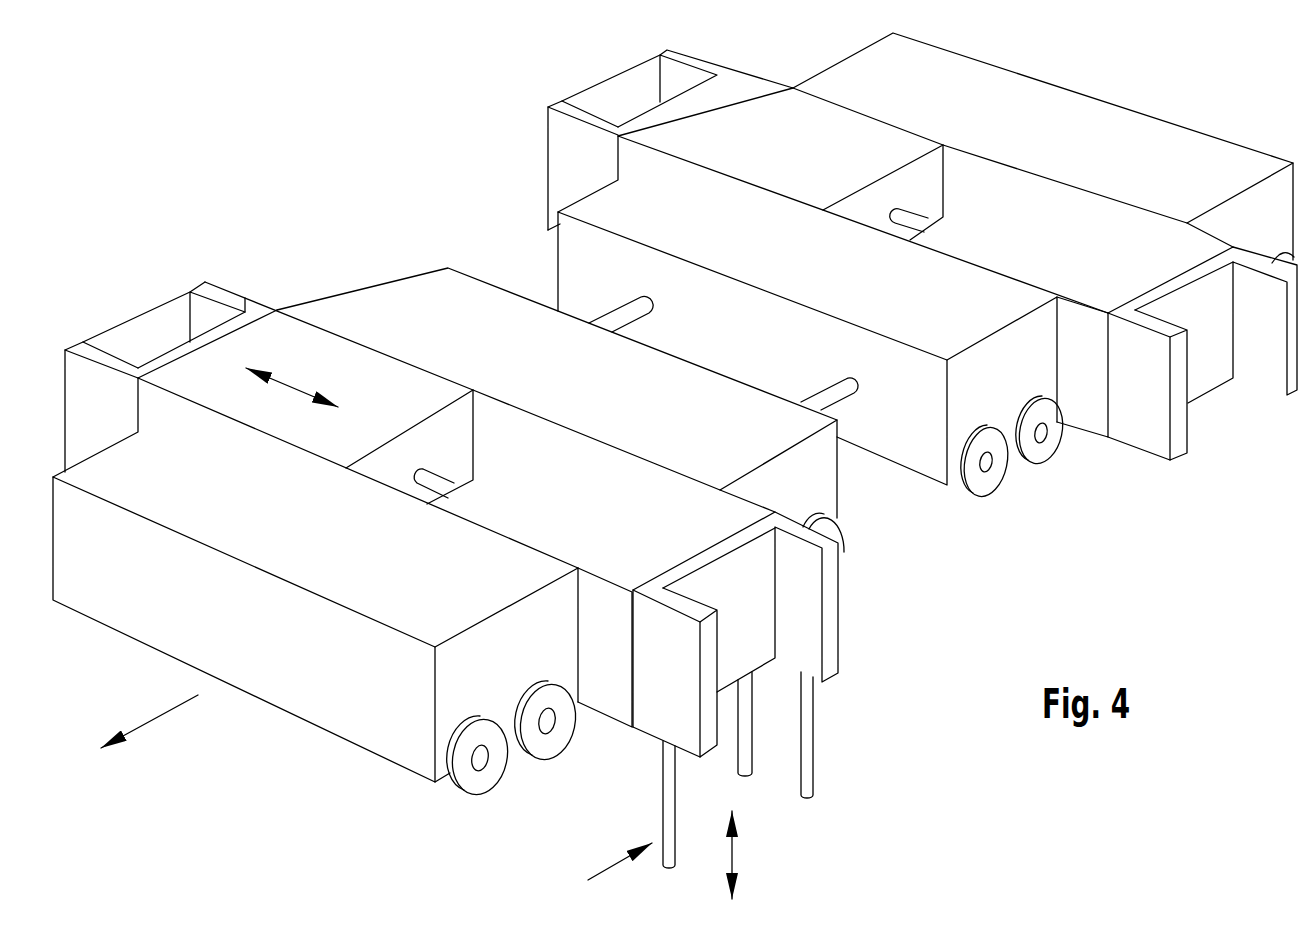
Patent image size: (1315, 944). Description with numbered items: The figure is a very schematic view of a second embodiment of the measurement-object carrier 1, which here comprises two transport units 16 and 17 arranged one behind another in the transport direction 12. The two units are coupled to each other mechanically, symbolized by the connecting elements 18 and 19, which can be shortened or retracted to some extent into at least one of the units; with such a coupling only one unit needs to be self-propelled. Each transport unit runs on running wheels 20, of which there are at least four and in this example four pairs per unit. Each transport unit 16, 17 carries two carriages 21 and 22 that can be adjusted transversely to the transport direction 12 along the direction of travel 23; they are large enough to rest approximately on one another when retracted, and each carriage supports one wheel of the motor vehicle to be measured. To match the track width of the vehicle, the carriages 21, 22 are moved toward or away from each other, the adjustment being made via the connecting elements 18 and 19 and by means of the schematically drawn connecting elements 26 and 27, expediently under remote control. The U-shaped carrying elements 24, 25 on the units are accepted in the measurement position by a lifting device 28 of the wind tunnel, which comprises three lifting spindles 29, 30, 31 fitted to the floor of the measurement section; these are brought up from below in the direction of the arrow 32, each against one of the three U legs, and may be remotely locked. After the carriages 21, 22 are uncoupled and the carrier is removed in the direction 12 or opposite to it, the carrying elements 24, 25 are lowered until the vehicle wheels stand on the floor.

The measurement-object carrier 1 is at (512, 202).
The transport direction 12 is at (177, 705).
The transport unit 16 is at (313, 736).
The transport unit 17 is at (1078, 473).
The connecting element 18 is at (627, 312).
The connecting element 19 is at (840, 393).
The running wheels 20 is at (534, 748).
The carriage 21 is at (281, 331).
The carriage 22 is at (603, 690).
The direction of travel 23 is at (301, 387).
The U-shaped carrying element 24 is at (78, 388).
The U-shaped carrying element 25 is at (688, 737).
The connecting element 26 is at (436, 476).
The connecting element 27 is at (908, 212).
The lifting device 28 is at (605, 874).
The lifting spindle 29 is at (670, 797).
The lifting spindle 30 is at (750, 712).
The lifting spindle 31 is at (814, 776).
The arrow 32 is at (734, 850).